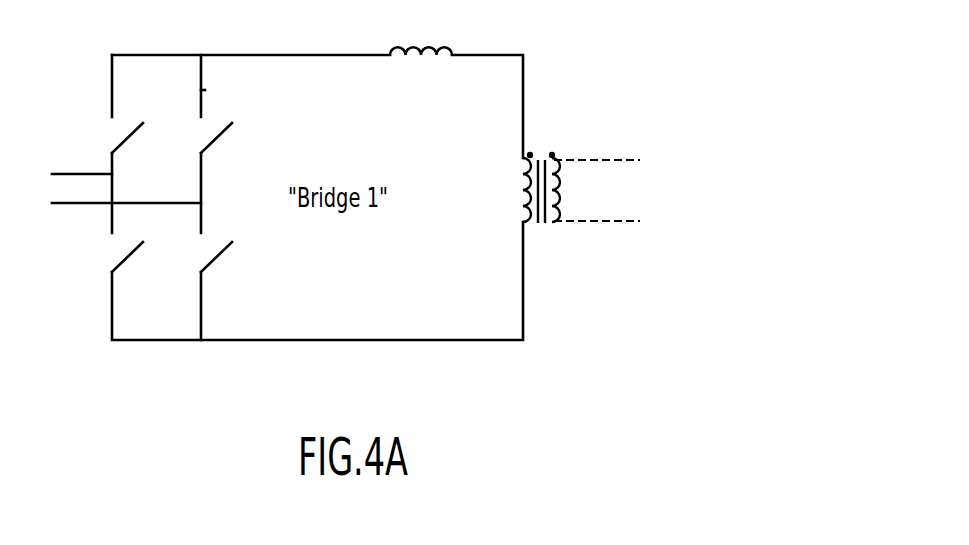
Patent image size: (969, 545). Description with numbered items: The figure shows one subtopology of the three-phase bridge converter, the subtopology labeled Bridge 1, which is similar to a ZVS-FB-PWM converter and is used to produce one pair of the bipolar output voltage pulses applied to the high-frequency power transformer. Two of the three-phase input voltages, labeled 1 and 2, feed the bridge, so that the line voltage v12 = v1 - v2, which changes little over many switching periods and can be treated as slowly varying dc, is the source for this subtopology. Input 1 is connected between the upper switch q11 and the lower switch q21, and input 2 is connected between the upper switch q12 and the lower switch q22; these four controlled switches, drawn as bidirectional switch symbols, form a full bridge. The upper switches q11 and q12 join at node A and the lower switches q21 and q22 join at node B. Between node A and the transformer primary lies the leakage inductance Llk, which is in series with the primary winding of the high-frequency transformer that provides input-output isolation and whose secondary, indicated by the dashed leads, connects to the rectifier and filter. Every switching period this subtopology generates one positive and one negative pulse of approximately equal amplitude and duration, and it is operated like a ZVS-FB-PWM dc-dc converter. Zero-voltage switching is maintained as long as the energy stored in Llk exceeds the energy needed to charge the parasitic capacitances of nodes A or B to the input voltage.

The three-phase input voltage 1 is at (70, 173).
The three-phase input voltage 2 is at (115, 204).
The bridge switch q11 is at (136, 85).
The bridge switch q12 is at (225, 86).
The bridge switch q21 is at (136, 310).
The bridge switch q22 is at (225, 310).
The node A is at (198, 40).
The node B is at (198, 356).
The leakage inductance Llk is at (421, 75).